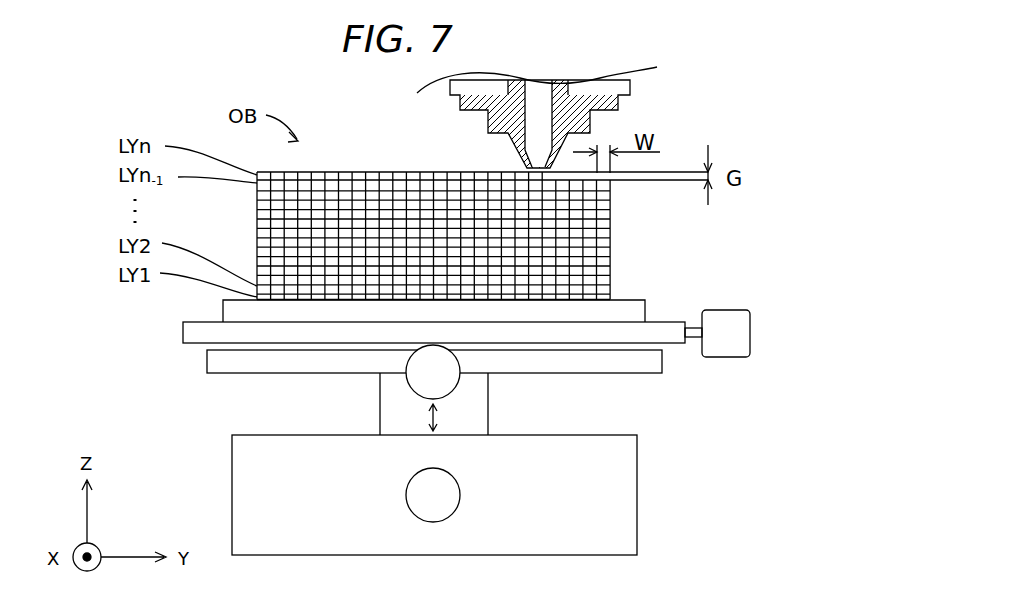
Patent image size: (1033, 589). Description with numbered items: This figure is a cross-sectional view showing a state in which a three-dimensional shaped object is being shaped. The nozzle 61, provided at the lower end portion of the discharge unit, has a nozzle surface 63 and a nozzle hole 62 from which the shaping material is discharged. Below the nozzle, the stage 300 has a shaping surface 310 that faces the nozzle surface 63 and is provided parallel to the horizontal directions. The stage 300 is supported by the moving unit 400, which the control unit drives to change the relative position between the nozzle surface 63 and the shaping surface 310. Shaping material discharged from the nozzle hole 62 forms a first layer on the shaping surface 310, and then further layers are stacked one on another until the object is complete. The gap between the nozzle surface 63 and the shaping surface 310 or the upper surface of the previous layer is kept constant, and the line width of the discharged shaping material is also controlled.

The nozzle 61 is at (466, 128).
The nozzle hole 62 is at (527, 167).
The nozzle surface 63 is at (547, 182).
The stage 300 is at (630, 311).
The shaping surface 310 is at (610, 299).
The moving unit 400 is at (681, 420).